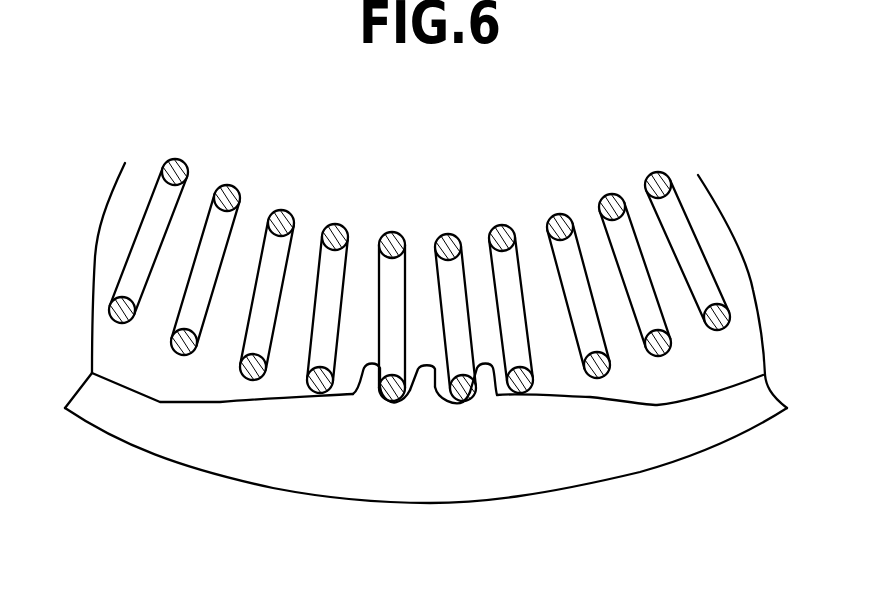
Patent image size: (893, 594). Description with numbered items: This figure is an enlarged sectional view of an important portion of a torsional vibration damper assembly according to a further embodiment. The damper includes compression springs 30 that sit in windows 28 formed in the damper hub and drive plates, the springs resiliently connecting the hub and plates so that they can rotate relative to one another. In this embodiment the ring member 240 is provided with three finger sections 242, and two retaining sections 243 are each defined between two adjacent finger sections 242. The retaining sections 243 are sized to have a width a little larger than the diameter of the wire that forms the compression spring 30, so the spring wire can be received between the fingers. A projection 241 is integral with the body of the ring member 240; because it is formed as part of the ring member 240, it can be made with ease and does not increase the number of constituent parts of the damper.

The compression spring 30 is at (612, 196).
The window 28 is at (643, 385).
The finger section 242 is at (372, 362).
The retaining section 243 is at (385, 402).
The ring member 240 is at (723, 430).
The projection 241 is at (355, 427).